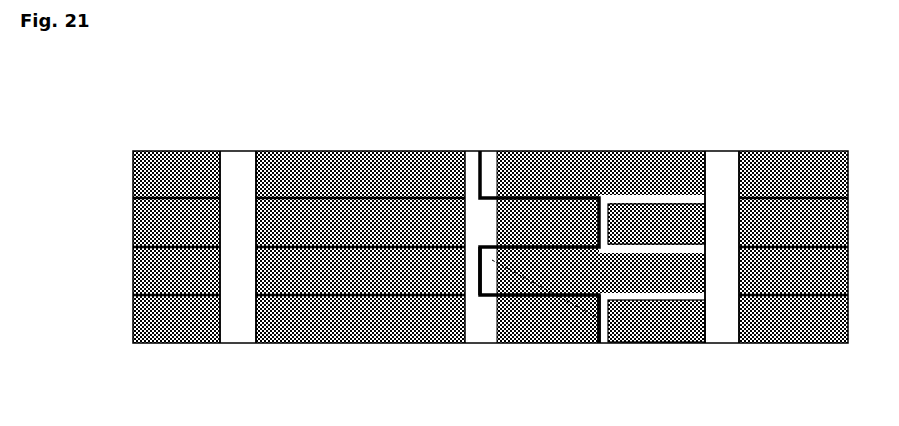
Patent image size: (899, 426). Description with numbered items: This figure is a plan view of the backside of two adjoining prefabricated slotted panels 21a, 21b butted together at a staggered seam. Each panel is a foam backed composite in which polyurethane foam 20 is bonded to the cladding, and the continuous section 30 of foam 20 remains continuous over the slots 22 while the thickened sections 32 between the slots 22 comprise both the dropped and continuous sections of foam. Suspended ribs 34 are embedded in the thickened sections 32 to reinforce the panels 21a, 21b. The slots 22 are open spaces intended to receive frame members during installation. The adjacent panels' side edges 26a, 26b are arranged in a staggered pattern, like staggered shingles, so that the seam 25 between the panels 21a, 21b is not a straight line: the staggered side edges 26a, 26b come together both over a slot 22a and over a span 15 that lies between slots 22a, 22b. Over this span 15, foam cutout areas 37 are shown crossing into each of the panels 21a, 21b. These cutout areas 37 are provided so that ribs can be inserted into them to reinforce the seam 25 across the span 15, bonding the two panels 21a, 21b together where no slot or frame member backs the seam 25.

The span 15 is at (715, 67).
The polyurethane foam 20 is at (200, 228).
The slotted panel 21a is at (185, 150).
The slotted panel 21b is at (800, 137).
The slot 22 is at (245, 162).
The slot 22a is at (468, 152).
The slot 22b is at (722, 163).
The seam 25 is at (485, 152).
The side edge 26a is at (597, 300).
The side edge 26b is at (607, 344).
The continuous section 30 is at (235, 163).
The thickened section 32 is at (160, 175).
The suspended rib 34 is at (342, 295).
The foam cutout area 37 is at (622, 200).